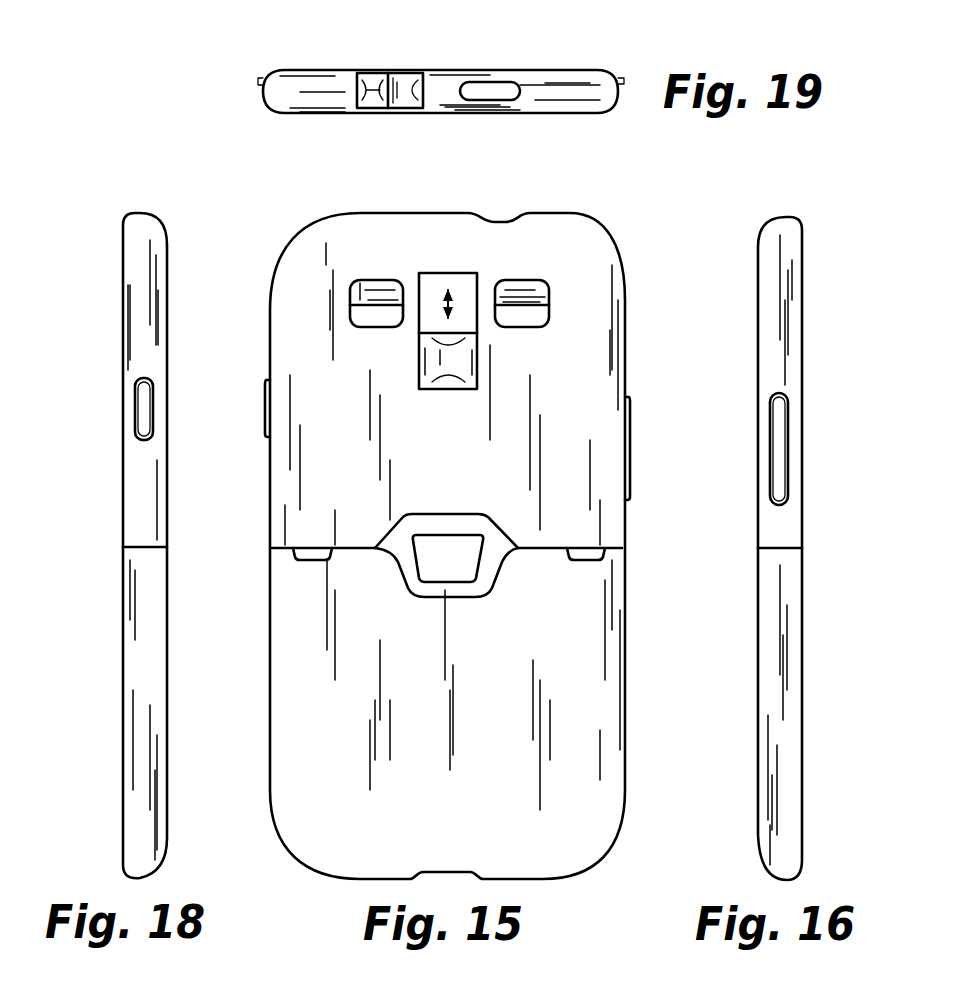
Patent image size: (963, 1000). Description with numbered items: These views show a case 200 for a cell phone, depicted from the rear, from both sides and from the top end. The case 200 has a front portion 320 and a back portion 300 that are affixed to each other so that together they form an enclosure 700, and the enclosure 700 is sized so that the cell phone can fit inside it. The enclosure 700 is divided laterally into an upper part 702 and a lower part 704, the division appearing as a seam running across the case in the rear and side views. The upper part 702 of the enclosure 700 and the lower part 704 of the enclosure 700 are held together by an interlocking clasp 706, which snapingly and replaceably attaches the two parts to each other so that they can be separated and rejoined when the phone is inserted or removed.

In FIG. 19, the case 200 is at (187, 79).
In FIG. 18, the case 200 is at (83, 516).
In FIG. 15, the case 200 is at (265, 219).
In FIG. 16, the case 200 is at (837, 476).
In FIG. 19, the back portion 300 is at (570, 65).
In FIG. 18, the back portion 300 is at (120, 418).
In FIG. 15, the back portion 300 is at (298, 342).
In FIG. 16, the back portion 300 is at (805, 303).
In FIG. 19, the front portion 320 is at (465, 115).
In FIG. 18, the front portion 320 is at (167, 782).
In FIG. 16, the front portion 320 is at (757, 693).
In FIG. 19, the enclosure 700 is at (297, 67).
In FIG. 18, the enclosure 700 is at (138, 218).
In FIG. 15, the enclosure 700 is at (362, 243).
In FIG. 16, the enclosure 700 is at (755, 253).
In FIG. 19, the upper part 702 is at (397, 67).
In FIG. 18, the upper part 702 is at (120, 322).
In FIG. 15, the upper part 702 is at (630, 308).
In FIG. 16, the upper part 702 is at (755, 400).
In FIG. 18, the lower part 704 is at (120, 783).
In FIG. 15, the lower part 704 is at (628, 703).
In FIG. 16, the lower part 704 is at (755, 857).
In FIG. 15, the interlocking clasp 706 is at (447, 557).